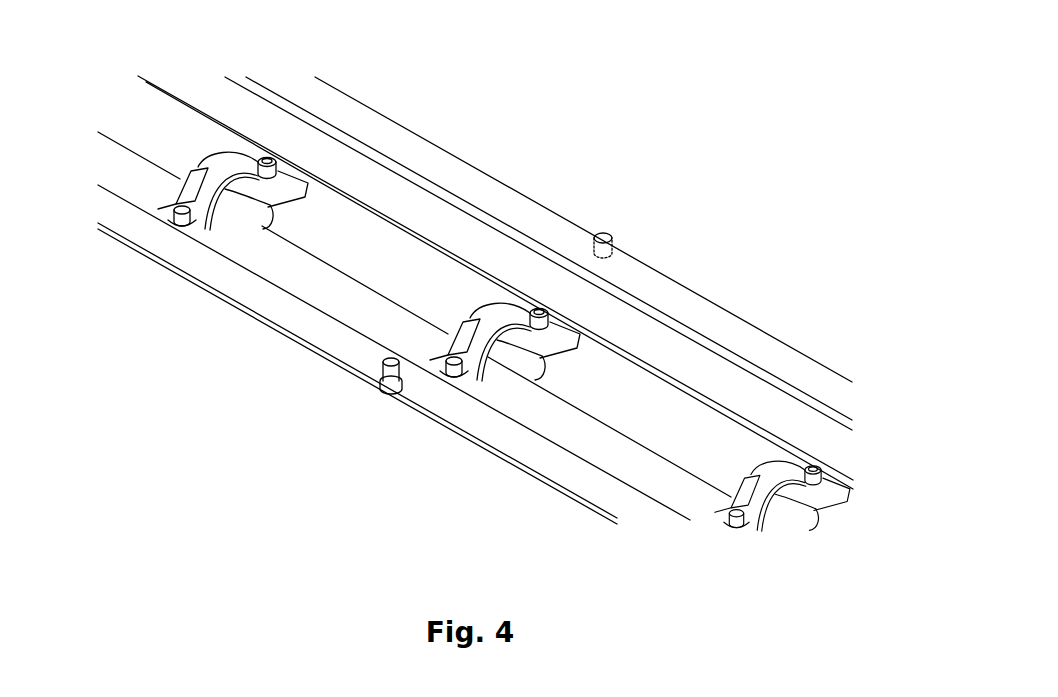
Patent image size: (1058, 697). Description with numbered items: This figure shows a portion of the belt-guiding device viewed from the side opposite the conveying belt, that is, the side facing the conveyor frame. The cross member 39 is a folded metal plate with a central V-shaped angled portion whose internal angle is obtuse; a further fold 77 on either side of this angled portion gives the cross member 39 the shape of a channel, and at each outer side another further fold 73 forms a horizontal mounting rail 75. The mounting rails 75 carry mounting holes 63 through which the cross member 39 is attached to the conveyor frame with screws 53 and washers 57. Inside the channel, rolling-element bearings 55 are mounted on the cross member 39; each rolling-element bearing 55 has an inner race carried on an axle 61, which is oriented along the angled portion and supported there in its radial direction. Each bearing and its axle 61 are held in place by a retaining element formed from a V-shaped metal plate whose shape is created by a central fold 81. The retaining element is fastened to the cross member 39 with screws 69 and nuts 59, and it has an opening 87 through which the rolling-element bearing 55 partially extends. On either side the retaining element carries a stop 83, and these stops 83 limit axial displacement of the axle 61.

The cross member 39 is at (383, 83).
The screws 53 is at (611, 236).
The rolling-element bearing 55 is at (557, 340).
The washers 57 is at (378, 393).
The nuts 59 is at (552, 312).
The axle 61 is at (521, 372).
The mounting holes 63 is at (393, 410).
The screws 69 is at (539, 308).
The further fold 73 is at (707, 332).
The mounting rails 75 is at (753, 347).
The further fold 77 is at (393, 212).
The central fold 81 is at (473, 322).
The stop 83 is at (548, 368).
The opening 87 is at (489, 378).